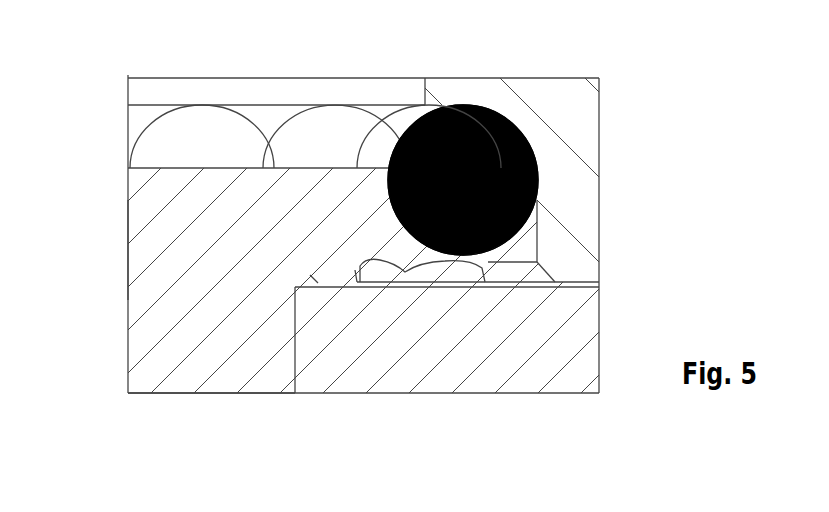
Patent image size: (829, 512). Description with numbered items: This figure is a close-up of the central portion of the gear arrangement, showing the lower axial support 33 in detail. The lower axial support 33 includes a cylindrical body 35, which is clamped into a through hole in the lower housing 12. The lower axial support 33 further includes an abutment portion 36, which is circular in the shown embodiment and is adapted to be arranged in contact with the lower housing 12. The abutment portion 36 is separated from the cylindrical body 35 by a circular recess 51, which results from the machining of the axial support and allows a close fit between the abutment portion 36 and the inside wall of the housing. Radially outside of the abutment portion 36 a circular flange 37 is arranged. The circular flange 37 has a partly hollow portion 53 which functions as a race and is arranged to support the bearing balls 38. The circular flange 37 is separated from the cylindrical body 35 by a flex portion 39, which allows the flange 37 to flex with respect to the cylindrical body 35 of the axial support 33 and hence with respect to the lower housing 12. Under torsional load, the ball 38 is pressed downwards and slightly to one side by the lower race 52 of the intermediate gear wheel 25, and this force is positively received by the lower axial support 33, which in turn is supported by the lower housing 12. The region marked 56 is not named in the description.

The lower housing 12 is at (552, 378).
The intermediate gear wheel 25 is at (600, 123).
The lower axial support 33 is at (143, 238).
The cylindrical body 35 is at (170, 372).
The abutment portion 36 is at (300, 378).
The circular flange 37 is at (437, 268).
The bearing balls 38 is at (421, 118).
The flex portion 39 is at (393, 256).
The circular recess 51 is at (310, 275).
The lower race 52 is at (519, 131).
The partly hollow portion 53 is at (396, 222).
The shoulder 56 is at (293, 326).